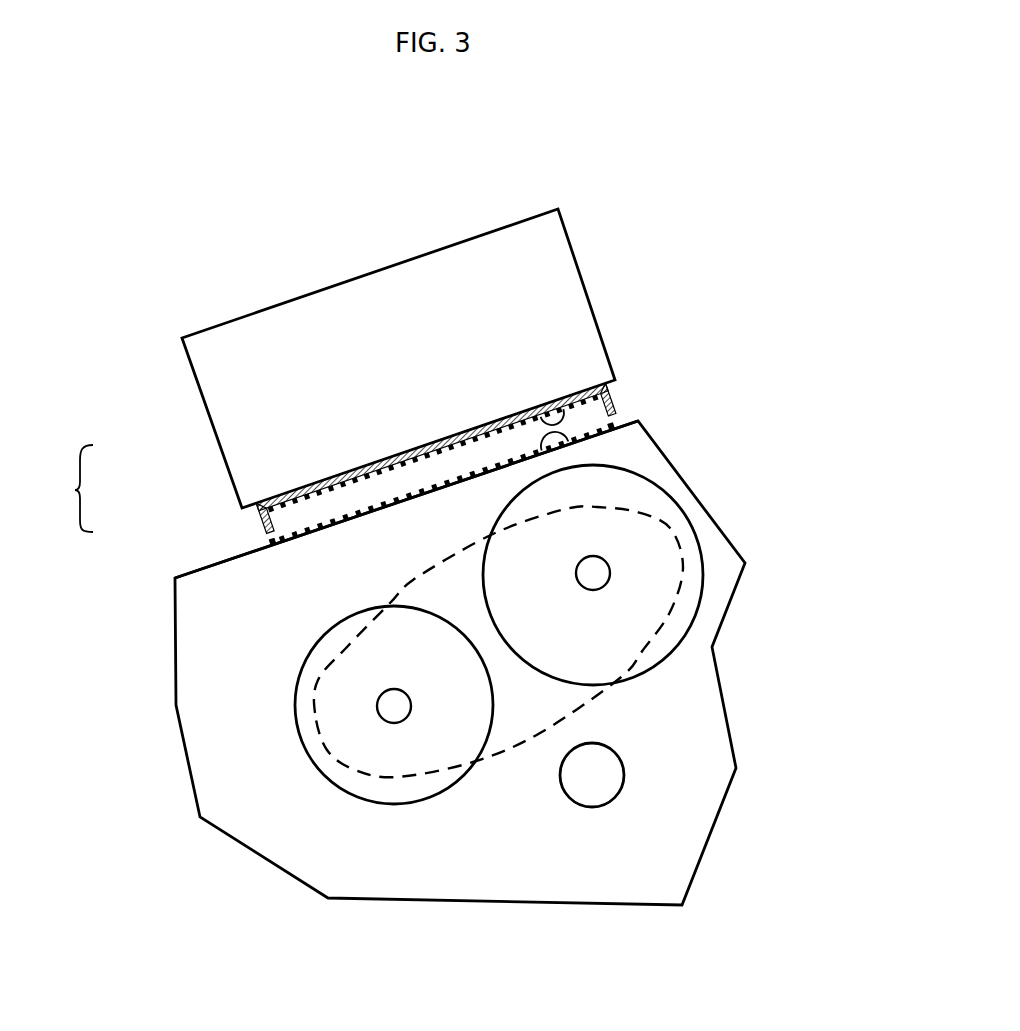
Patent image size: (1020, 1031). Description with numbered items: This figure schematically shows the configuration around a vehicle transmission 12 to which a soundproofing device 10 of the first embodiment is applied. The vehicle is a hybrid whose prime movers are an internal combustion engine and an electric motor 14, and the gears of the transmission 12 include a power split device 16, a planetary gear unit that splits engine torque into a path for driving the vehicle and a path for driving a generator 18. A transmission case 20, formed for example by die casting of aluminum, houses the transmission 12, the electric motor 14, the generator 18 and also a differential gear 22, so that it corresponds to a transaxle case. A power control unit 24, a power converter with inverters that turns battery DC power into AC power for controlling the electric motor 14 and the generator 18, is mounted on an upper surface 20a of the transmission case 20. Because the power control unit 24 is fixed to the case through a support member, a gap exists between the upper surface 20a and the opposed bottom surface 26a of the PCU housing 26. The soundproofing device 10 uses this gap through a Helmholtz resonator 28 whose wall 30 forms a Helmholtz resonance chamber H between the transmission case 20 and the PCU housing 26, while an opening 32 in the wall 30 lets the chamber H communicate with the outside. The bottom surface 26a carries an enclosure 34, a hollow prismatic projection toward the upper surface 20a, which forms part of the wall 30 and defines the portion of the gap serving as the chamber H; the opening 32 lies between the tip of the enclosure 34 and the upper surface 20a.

The soundproofing device 10 is at (652, 381).
The transmission 12 is at (726, 509).
The electric motor 14 is at (695, 614).
The power split device 16 is at (522, 745).
The generator 18 is at (395, 805).
The transmission case 20 is at (188, 566).
The upper surface 20a is at (576, 441).
The differential gear 22 is at (592, 807).
The power control unit 24 is at (488, 213).
The PCU housing 26 is at (208, 446).
The bottom surface 26a is at (574, 396).
The Helmholtz resonator 28 is at (618, 390).
The wall 30 is at (68, 488).
The opening 32 is at (270, 543).
The enclosure 34 is at (258, 520).
The Helmholtz resonance chamber H is at (292, 540).